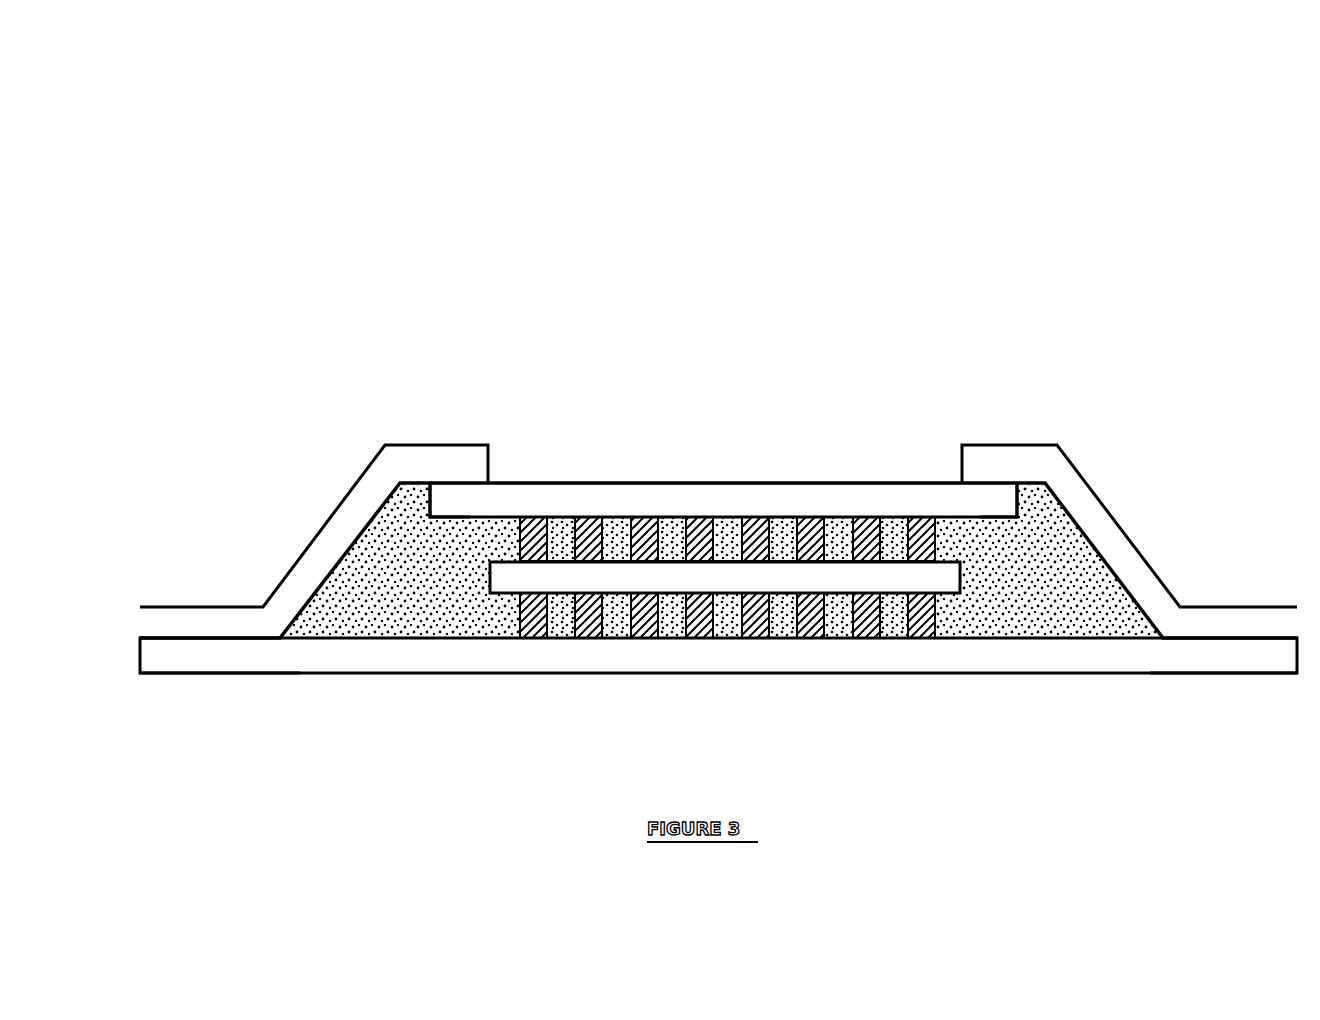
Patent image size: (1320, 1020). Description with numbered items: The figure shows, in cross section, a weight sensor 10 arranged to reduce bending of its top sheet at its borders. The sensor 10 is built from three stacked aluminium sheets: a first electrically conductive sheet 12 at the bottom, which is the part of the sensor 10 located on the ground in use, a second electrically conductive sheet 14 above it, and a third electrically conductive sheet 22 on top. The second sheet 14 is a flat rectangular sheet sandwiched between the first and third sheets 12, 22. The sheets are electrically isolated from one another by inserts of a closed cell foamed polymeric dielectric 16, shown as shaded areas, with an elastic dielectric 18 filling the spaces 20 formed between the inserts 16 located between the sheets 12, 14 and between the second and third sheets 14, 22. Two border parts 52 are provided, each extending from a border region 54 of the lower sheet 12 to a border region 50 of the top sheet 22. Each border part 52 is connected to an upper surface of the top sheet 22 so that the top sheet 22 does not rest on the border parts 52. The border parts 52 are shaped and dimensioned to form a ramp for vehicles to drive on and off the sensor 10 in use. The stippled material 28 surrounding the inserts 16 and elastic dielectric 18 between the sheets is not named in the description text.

The weight sensor 10 is at (890, 148).
The first electrically conductive sheet 12 is at (1042, 657).
The second electrically conductive sheet 14 is at (512, 577).
The closed cell foamed polymeric dielectric inserts 16 is at (645, 520).
The elastic dielectric 18 is at (727, 522).
The spaces 20 is at (723, 525).
The third electrically conductive sheet 22 is at (805, 500).
The encapsulant 28 is at (380, 563).
The border regions of the third sheet 50 is at (462, 503).
The border parts 52 is at (310, 575).
The border region of the lower sheet 54 is at (212, 657).